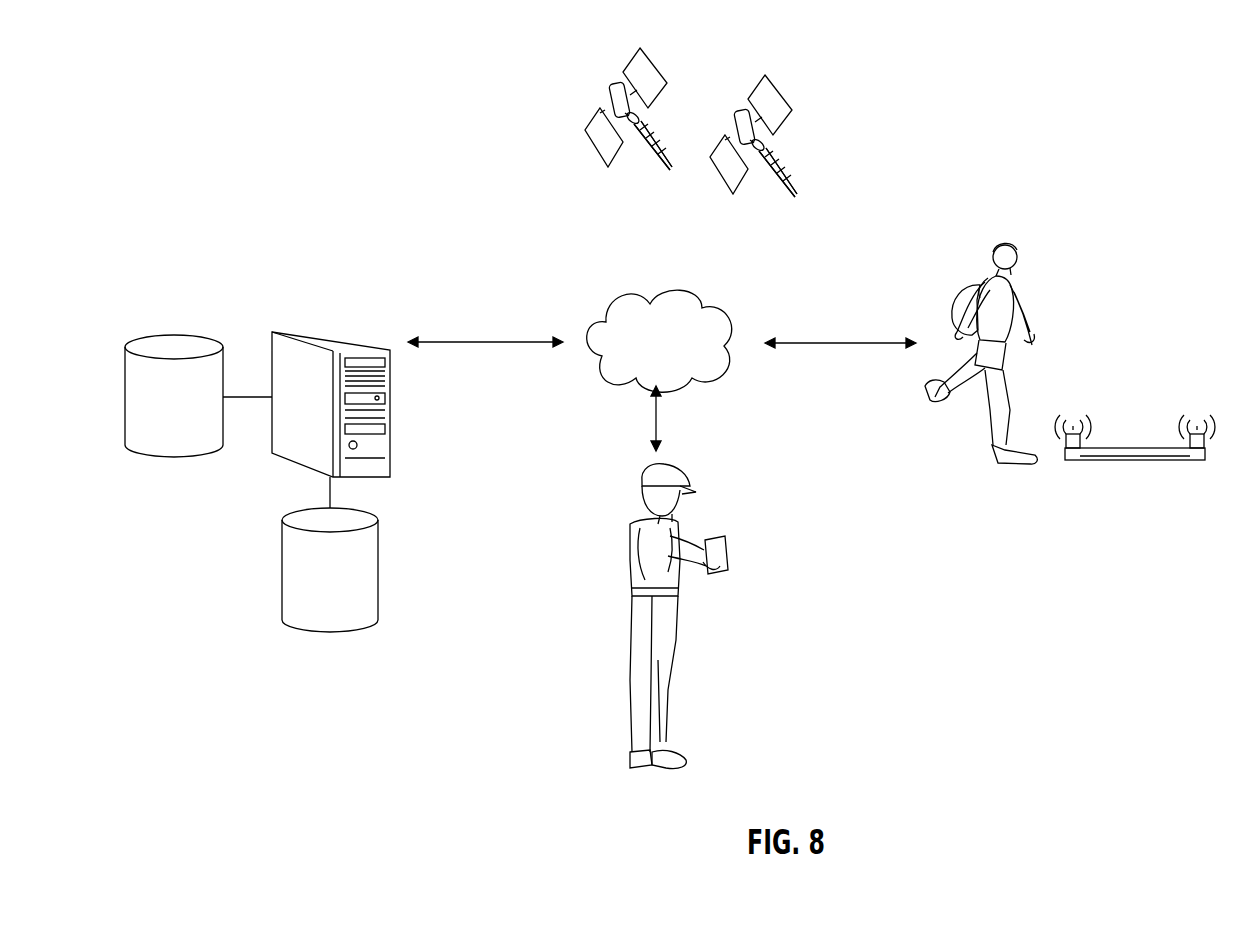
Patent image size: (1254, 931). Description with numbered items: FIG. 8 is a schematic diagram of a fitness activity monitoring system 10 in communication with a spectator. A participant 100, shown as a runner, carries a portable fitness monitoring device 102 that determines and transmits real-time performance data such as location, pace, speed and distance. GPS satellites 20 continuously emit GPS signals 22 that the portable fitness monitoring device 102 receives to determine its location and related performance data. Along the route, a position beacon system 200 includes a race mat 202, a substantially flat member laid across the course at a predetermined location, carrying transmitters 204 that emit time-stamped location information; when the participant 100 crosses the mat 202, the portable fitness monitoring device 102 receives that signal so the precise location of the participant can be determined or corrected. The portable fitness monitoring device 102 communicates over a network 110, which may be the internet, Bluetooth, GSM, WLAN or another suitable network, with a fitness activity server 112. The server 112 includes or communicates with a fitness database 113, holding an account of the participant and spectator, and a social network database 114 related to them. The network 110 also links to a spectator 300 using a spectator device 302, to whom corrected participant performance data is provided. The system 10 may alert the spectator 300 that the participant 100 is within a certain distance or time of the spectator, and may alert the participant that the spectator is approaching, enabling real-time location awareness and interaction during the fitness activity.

The system 10 is at (226, 146).
The GPS satellites 20 is at (657, 65).
The GPS signals 22 is at (653, 140).
The participant 100 is at (992, 246).
The portable fitness monitoring device 102 is at (964, 282).
The network 110 is at (688, 288).
The fitness activity server 112 is at (335, 330).
The fitness database 113 is at (168, 335).
The social network database 114 is at (282, 567).
The position beacon system 200 is at (1040, 474).
The race mat 202 is at (1106, 462).
The transmitters 204 is at (1072, 420).
The spectator 300 is at (628, 547).
The spectator device 302 is at (730, 552).